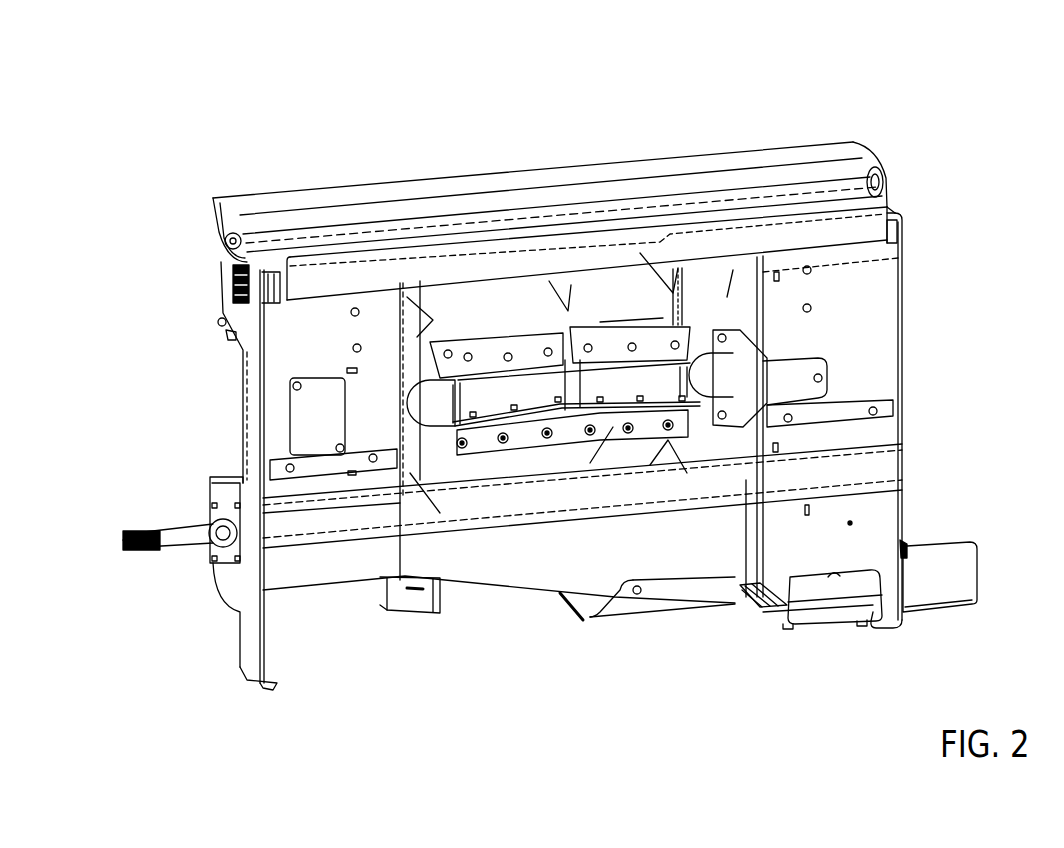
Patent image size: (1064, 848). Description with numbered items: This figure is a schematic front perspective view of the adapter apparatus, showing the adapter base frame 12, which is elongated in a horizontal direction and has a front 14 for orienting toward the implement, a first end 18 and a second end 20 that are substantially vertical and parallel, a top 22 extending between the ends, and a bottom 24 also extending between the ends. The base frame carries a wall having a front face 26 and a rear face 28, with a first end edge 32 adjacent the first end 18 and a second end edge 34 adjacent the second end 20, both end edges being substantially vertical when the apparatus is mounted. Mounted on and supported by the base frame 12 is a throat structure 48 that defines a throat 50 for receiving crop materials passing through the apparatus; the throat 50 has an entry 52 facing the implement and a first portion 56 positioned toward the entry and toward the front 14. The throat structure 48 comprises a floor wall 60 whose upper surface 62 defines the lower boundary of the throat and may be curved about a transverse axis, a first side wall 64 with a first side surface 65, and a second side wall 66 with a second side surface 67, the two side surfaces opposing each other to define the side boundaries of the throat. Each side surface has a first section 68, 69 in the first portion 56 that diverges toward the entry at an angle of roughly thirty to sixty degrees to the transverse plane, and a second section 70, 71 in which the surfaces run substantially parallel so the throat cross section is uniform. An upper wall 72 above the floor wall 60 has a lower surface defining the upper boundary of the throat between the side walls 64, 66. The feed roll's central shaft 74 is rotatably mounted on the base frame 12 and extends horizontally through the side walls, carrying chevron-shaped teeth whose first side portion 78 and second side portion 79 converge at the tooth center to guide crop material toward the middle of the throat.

The adapter base frame 12 is at (887, 183).
The front 14 is at (873, 372).
The first end 18 is at (250, 360).
The second end 20 is at (903, 352).
The top 22 is at (805, 152).
The bottom 24 is at (493, 586).
The front face 26 is at (877, 423).
The rear face 28 is at (877, 442).
The first end edge 32 is at (220, 322).
The second end edge 34 is at (903, 233).
The throat structure 48 is at (407, 289).
The throat 50 is at (563, 470).
The entry 52 is at (517, 480).
The first portion 56 is at (750, 367).
The floor wall 60 is at (745, 590).
The upper surface 62 is at (687, 473).
The first side wall 64 is at (410, 352).
The first side surface 65 is at (440, 513).
The second side wall 66 is at (725, 313).
The second side surface 67 is at (713, 450).
The first section 68 is at (263, 270).
The first section 69 is at (727, 297).
The second section 70 is at (447, 297).
The second section 71 is at (640, 253).
The upper wall 72 is at (567, 298).
The central shaft 74 is at (428, 403).
The first side portion 78 is at (487, 357).
The second side portion 79 is at (600, 337).